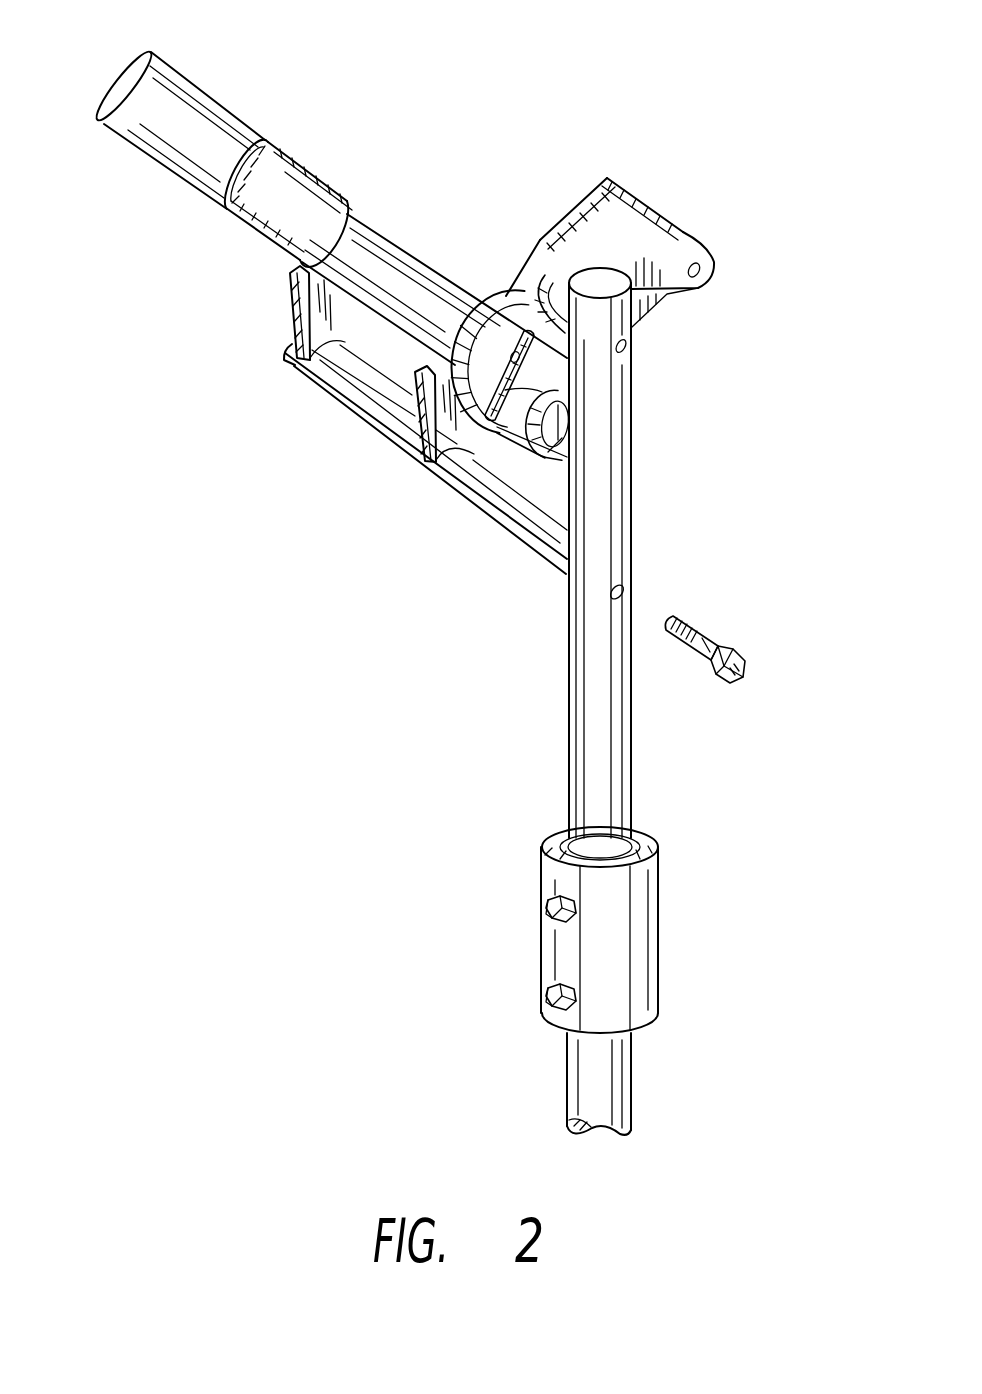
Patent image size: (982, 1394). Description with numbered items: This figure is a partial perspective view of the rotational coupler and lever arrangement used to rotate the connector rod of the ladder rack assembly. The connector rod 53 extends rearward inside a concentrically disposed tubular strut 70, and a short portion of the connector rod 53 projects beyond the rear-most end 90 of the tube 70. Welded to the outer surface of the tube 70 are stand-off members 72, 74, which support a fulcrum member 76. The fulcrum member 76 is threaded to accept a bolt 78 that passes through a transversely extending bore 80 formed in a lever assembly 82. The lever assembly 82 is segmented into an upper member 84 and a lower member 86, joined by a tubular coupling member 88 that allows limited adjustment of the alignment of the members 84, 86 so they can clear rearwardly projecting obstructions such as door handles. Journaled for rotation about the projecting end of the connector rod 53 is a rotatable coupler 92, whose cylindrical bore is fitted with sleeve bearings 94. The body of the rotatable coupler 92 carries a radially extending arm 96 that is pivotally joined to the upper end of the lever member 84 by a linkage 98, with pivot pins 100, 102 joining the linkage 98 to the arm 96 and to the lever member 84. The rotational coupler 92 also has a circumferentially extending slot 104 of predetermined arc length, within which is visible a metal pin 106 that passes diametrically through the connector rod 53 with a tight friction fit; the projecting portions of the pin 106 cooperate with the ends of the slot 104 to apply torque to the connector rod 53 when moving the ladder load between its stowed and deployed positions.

The connector rod 53 is at (300, 197).
The tubular strut 70 is at (194, 85).
The stand-off member 72 is at (292, 306).
The stand-off member 74 is at (427, 422).
The fulcrum member 76 is at (513, 540).
The bolt 78 is at (703, 633).
The transversely extending bore 80 is at (628, 585).
The lever assembly 82 is at (458, 762).
The upper member 84 is at (619, 742).
The lower member 86 is at (630, 1071).
The tubular coupling member 88 is at (650, 897).
The rear-most end 90 is at (465, 340).
The rotatable coupler 92 is at (535, 273).
The sleeve bearings 94 is at (567, 450).
The radially extending arm 96 is at (624, 235).
The linkage 98 is at (660, 289).
The pivot pin 100 is at (700, 268).
The pivot pin 102 is at (626, 349).
The circumferentially extending slot 104 is at (457, 445).
The metal pin 106 is at (513, 357).